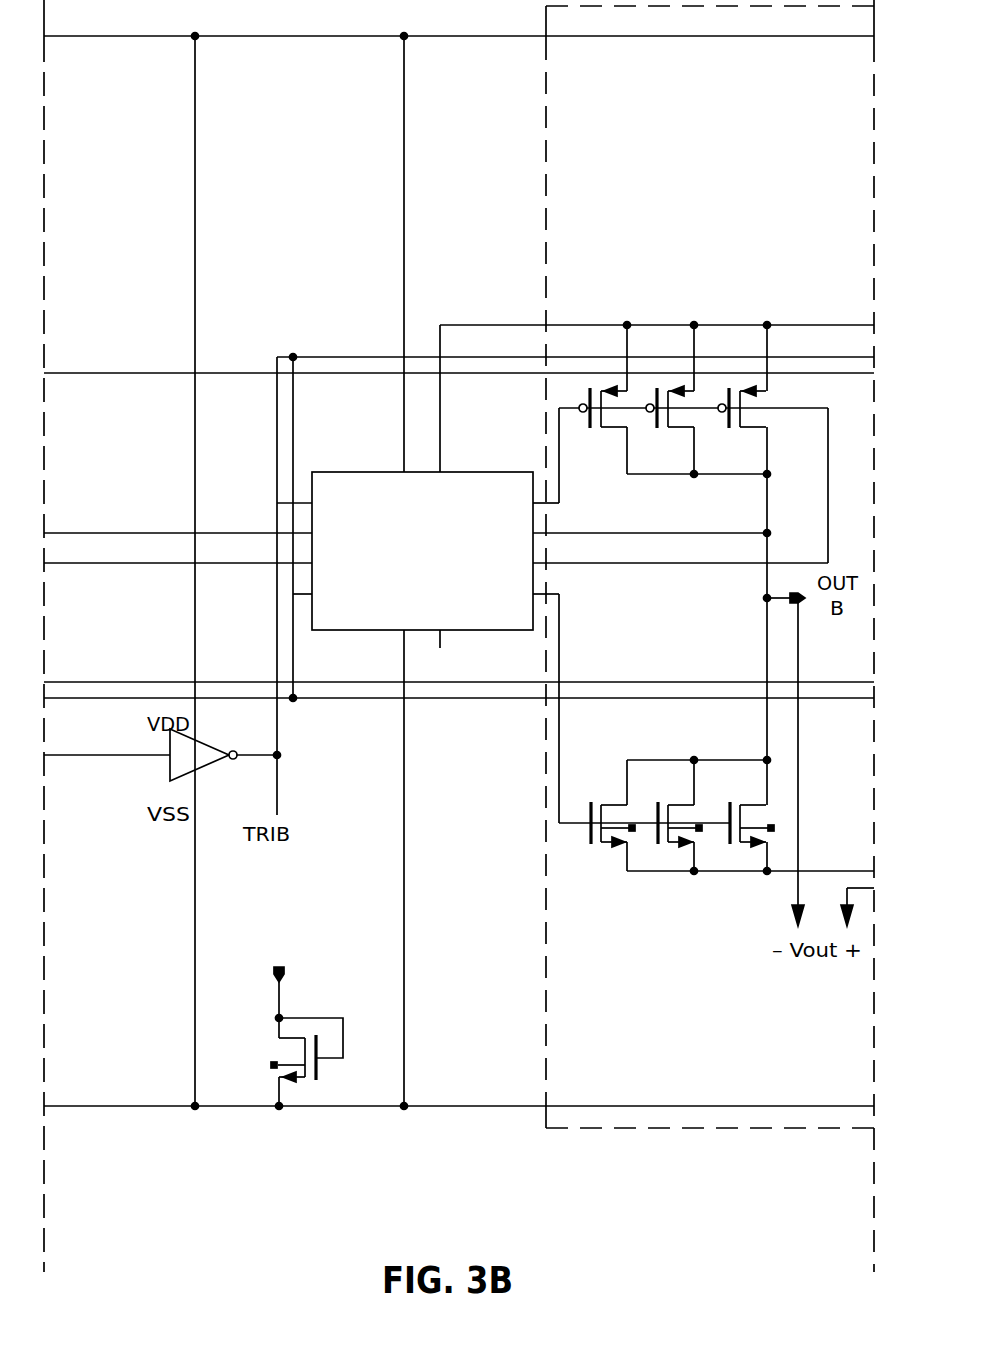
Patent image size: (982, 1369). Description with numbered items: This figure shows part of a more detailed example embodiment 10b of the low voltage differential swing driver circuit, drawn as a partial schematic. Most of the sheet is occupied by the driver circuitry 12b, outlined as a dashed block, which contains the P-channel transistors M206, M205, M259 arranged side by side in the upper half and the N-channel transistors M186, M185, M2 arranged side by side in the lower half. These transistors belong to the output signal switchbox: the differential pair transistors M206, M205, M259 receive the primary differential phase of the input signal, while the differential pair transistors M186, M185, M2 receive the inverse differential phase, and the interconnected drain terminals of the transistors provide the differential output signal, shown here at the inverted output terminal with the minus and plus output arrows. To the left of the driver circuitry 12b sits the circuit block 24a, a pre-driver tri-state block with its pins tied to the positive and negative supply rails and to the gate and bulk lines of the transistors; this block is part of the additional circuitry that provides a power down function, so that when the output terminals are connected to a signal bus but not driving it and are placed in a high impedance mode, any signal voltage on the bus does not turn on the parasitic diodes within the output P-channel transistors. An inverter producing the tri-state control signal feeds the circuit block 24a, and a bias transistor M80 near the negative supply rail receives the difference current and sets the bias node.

The detailed example embodiment 10b is at (302, 1192).
The LVDS driver circuitry 12b is at (546, 14).
The circuit block 24a is at (506, 469).
The P-MOSFET M206 is at (597, 399).
The P-MOSFET M205 is at (665, 399).
The P-MOSFET M259 is at (737, 399).
The N-MOSFET M186 is at (602, 815).
The N-MOSFET M185 is at (670, 815).
The N-MOSFET M2 is at (751, 815).
The bias NMOS transistor M80 is at (290, 1024).